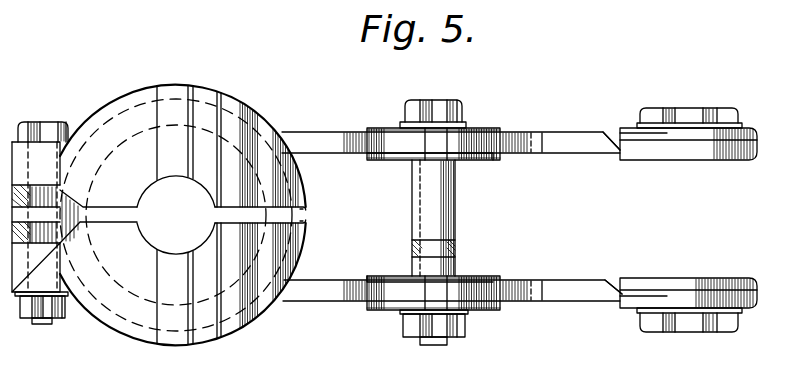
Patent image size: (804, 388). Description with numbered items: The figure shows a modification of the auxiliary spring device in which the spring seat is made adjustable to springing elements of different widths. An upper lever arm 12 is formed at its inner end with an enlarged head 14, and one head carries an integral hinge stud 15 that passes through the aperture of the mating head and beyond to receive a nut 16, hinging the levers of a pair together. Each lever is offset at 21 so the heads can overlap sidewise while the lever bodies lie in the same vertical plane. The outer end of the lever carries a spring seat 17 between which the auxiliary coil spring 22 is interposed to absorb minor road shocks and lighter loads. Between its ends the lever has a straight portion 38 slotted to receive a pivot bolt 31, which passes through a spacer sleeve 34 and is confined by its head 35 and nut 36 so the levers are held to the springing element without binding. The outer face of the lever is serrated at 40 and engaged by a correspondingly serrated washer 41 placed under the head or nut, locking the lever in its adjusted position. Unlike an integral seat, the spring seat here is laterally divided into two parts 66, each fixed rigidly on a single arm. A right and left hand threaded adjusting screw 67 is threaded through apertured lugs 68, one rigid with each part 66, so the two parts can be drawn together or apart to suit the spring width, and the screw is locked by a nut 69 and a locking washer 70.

The upper lever arm 12 is at (553, 131).
The head 14 is at (730, 128).
The hinge stud 15 is at (673, 141).
The nut 16 is at (723, 110).
The spring seat 17 is at (728, 280).
The offset 21 is at (617, 150).
The coil spring 22 is at (300, 238).
The pivot bolt 31 is at (420, 341).
The spacer sleeve 34 is at (458, 215).
The head 35 is at (432, 99).
The nut 36 is at (452, 339).
The straight portion 38 is at (398, 158).
The serrated face 40 is at (483, 127).
The serrated washer 41 is at (400, 122).
The spring seat part 66 is at (205, 97).
The adjusting screw 67 is at (55, 326).
The apertured lug 68 is at (38, 147).
The nut 69 is at (64, 308).
The locking washer 70 is at (24, 298).